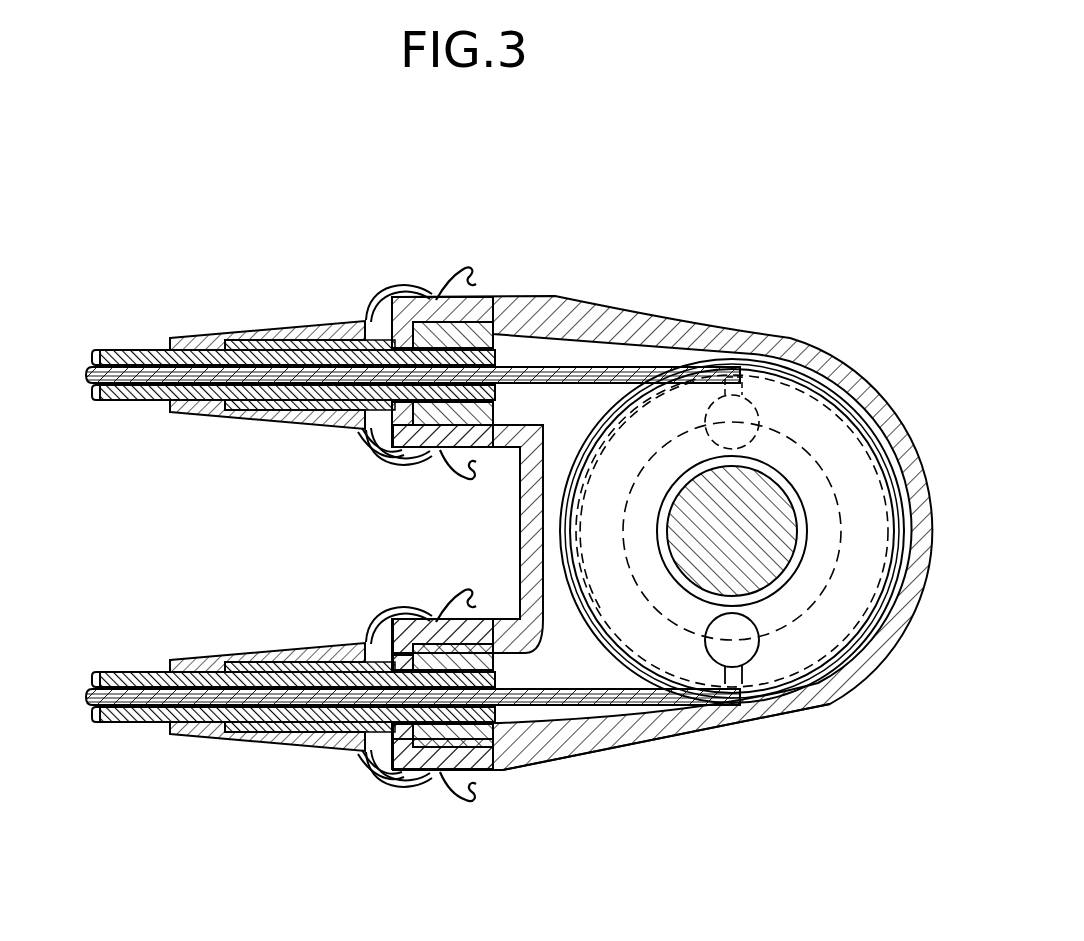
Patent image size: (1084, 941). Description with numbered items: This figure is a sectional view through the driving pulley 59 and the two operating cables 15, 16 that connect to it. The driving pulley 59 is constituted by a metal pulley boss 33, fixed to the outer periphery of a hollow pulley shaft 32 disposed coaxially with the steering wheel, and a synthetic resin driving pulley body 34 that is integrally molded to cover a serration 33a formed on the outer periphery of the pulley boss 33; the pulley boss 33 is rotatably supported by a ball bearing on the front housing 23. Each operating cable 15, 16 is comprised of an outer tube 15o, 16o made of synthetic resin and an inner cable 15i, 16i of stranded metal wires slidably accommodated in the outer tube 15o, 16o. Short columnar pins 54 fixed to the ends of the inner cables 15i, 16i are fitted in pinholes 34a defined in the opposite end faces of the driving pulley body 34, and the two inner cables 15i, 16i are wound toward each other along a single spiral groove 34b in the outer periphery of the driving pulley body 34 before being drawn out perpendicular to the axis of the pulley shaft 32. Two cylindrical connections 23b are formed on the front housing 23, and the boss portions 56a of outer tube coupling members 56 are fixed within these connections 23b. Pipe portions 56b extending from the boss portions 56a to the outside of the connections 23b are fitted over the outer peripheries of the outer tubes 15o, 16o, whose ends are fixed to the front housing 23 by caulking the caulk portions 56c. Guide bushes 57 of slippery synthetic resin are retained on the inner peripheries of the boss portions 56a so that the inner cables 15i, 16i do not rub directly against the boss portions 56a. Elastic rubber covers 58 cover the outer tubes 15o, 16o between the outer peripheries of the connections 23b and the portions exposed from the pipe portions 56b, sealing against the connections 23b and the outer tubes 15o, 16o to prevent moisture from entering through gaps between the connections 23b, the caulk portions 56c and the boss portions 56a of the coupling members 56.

The operating cable 15 is at (413, 306).
The inner cable 15i is at (253, 268).
The outer tube 15o is at (203, 358).
The operating cable 16 is at (413, 616).
The inner cable 16i is at (253, 557).
The outer tube 16o is at (158, 670).
The front housing 23 is at (696, 318).
The cylindrical connection 23b is at (432, 296).
The pulley shaft 32 is at (717, 548).
The pulley boss 33 is at (753, 519).
The serration 33a is at (762, 425).
The driving pulley body 34 is at (735, 514).
The pinhole 34a is at (770, 362).
The spiral groove 34b is at (600, 608).
The columnar pin 54 is at (862, 396).
The outer tube coupling member 56 is at (380, 322).
The boss portion 56a is at (437, 316).
The pipe portion 56b is at (322, 340).
The caulk portion 56c is at (293, 404).
The guide bush 57 is at (442, 428).
The rubber cover 58 is at (365, 438).
The driving pulley 59 is at (614, 676).